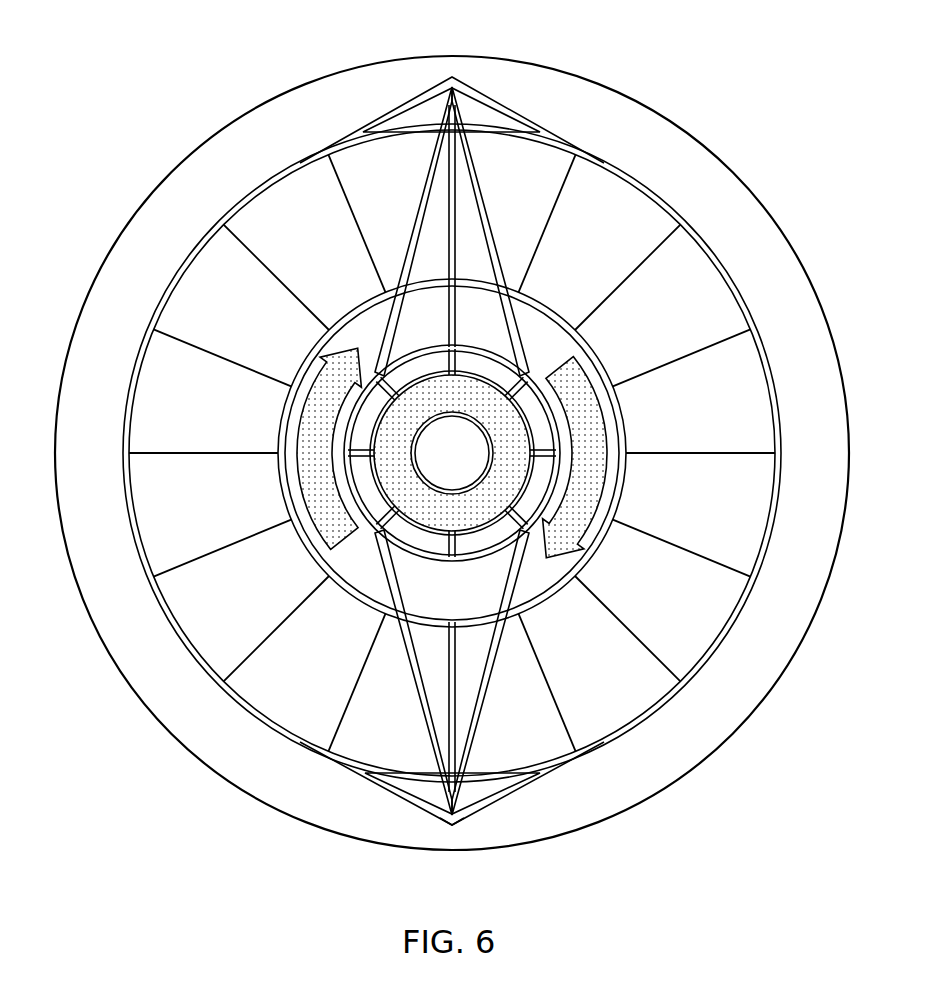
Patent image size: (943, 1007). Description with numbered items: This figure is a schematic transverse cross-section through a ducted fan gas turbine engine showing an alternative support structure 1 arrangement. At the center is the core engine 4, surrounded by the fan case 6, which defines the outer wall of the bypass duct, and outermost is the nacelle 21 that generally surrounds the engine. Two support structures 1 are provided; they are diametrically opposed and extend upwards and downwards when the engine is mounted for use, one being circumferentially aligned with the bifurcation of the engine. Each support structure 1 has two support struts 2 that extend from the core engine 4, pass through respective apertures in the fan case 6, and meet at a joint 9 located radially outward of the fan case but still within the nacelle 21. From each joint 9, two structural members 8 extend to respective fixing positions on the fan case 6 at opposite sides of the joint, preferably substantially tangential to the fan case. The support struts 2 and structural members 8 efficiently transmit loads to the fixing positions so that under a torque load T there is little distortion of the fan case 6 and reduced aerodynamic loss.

The support structure 1 is at (514, 224).
The support strut 2 is at (413, 693).
The core engine 4 is at (461, 464).
The fan case 6 is at (205, 232).
The structural member 8 is at (388, 797).
The joint 9 is at (453, 828).
The nacelle 21 is at (297, 103).
The torque load T is at (297, 472).